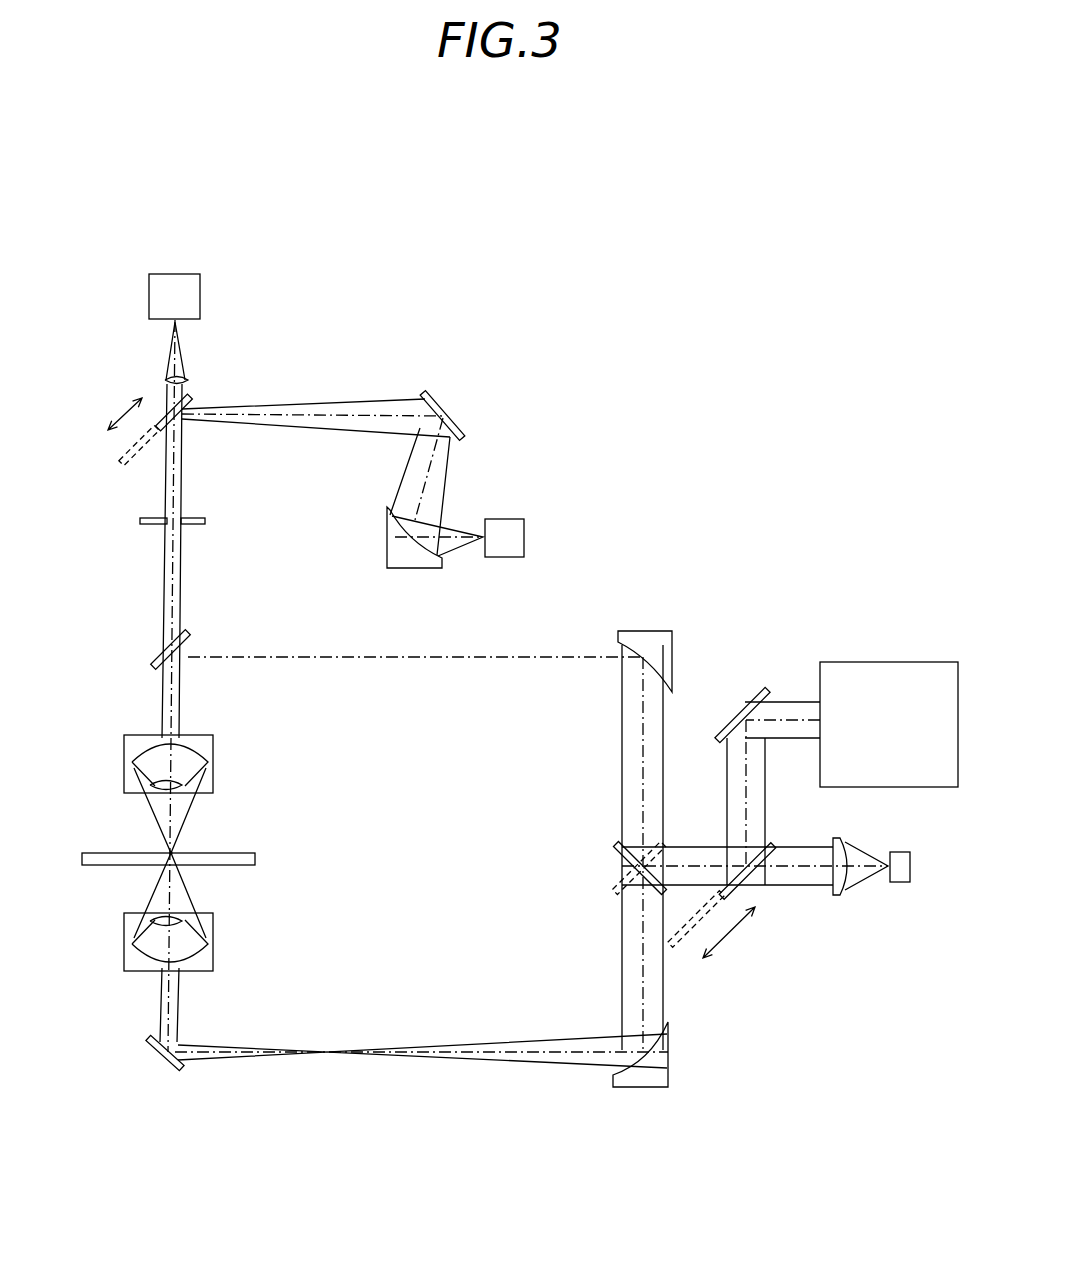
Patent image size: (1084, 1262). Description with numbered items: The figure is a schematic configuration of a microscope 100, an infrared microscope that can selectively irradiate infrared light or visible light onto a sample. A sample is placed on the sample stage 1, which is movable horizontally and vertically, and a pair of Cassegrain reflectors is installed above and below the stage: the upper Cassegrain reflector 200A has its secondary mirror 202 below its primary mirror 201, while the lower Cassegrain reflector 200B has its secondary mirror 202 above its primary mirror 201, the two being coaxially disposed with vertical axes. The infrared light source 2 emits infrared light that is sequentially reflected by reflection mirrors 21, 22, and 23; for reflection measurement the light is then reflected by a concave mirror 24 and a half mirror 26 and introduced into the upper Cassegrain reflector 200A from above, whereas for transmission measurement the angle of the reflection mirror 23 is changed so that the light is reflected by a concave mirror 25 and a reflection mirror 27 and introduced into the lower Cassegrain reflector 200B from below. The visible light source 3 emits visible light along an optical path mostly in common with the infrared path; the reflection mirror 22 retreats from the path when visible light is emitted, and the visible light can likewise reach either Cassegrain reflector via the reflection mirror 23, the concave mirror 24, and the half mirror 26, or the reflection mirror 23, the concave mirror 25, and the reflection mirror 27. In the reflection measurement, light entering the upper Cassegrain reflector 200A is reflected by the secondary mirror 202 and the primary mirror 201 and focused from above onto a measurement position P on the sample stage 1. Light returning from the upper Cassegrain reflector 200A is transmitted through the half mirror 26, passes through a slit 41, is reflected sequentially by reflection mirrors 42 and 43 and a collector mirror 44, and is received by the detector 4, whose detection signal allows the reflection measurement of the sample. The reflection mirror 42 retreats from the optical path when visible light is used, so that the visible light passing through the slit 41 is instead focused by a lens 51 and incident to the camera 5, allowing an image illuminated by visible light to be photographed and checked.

The microscope 100 is at (602, 272).
The camera 5 is at (175, 274).
The lens 51 is at (165, 380).
The reflection mirror 42 is at (190, 397).
The reflection mirror 43 is at (450, 395).
The collector mirror 44 is at (387, 545).
The detector 4 is at (524, 537).
The slit 41 is at (140, 521).
The half mirror 26 is at (153, 660).
The upper Cassegrain reflector 200A is at (213, 750).
The lower Cassegrain reflector 200B is at (213, 933).
The primary mirror 201 is at (132, 762).
The secondary mirror 202 is at (150, 790).
The measurement position P is at (190, 852).
The sample stage 1 is at (255, 858).
The reflection mirror 27 is at (150, 1052).
The concave mirror 25 is at (668, 1065).
The concave mirror 24 is at (655, 631).
The reflection mirror 23 is at (615, 843).
The reflection mirror 21 is at (745, 690).
The reflection mirror 22 is at (748, 873).
The visible light source 3 is at (903, 883).
The infrared light source 2 is at (889, 662).